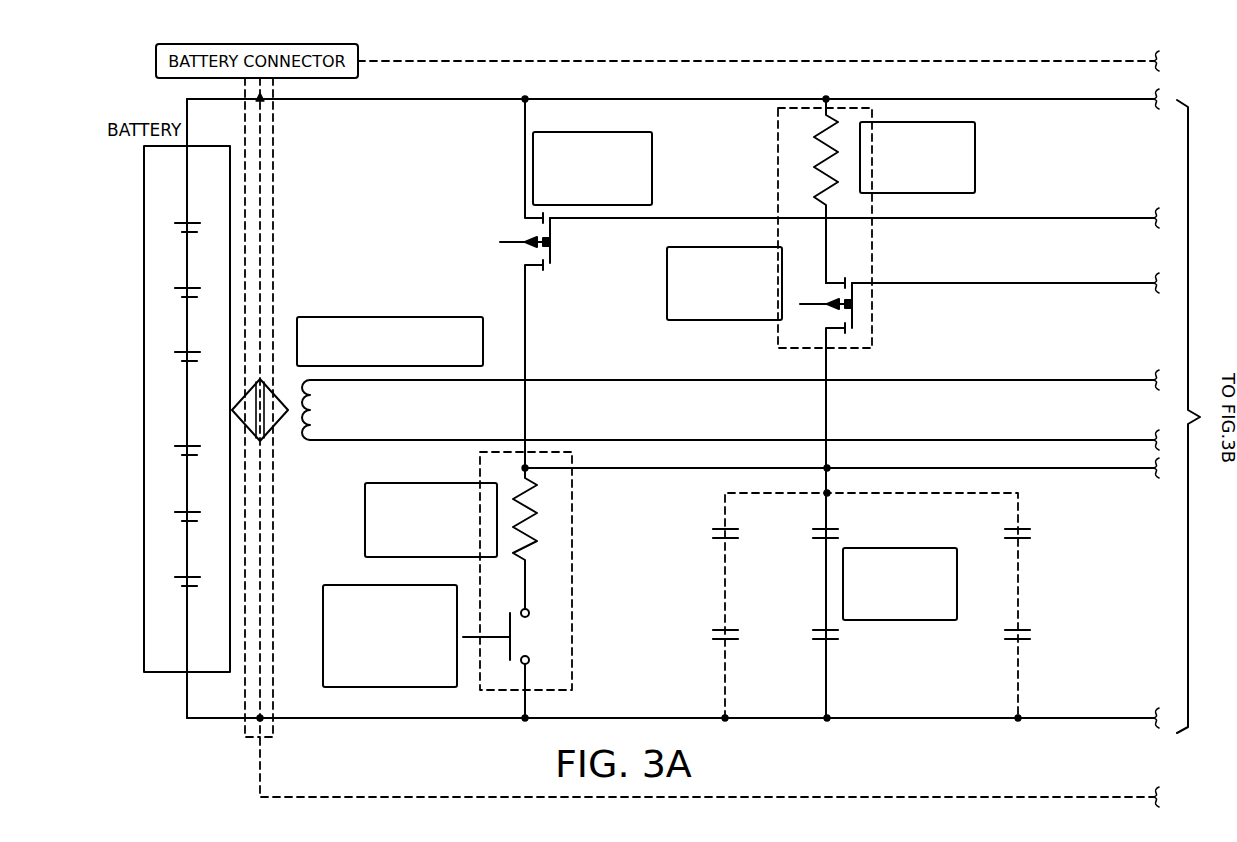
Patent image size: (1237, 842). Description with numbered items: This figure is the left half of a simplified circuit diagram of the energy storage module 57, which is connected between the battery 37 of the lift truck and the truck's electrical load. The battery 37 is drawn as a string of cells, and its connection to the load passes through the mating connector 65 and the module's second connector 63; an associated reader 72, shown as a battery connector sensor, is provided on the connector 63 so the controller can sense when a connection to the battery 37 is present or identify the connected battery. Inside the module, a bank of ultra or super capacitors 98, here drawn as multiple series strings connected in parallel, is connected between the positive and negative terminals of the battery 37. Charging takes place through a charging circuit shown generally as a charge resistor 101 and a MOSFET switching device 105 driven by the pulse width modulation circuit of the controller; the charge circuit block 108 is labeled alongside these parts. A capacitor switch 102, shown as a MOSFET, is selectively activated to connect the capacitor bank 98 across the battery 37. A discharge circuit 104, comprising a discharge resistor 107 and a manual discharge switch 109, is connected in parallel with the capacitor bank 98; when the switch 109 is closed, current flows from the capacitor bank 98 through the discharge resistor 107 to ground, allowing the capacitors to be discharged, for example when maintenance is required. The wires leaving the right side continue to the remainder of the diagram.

The battery 37 is at (155, 673).
The energy storage module 57 is at (483, 68).
The second connector 63 is at (274, 134).
The mating connector 65 is at (244, 134).
The reader 72 is at (345, 442).
The capacitor bank 98 is at (902, 620).
The resistor 101 is at (810, 141).
The capacitor switch 102 is at (553, 248).
The discharge circuit 104 is at (491, 670).
The MOSFET switching device 105 is at (813, 323).
The discharge resistor 107 is at (540, 528).
The charge circuit 108 is at (666, 292).
The manual discharge switch 109 is at (538, 639).